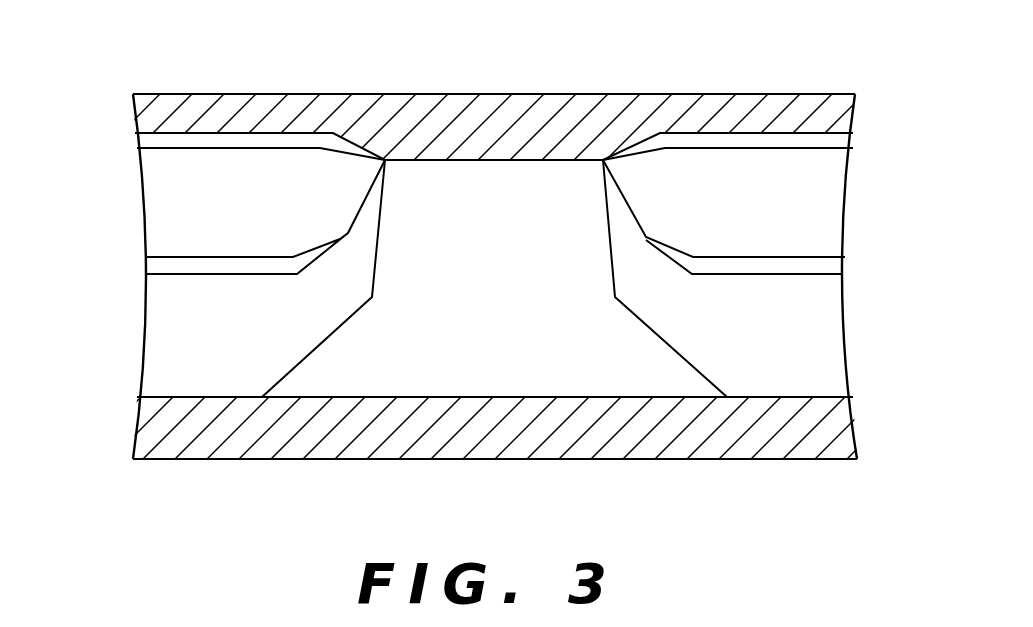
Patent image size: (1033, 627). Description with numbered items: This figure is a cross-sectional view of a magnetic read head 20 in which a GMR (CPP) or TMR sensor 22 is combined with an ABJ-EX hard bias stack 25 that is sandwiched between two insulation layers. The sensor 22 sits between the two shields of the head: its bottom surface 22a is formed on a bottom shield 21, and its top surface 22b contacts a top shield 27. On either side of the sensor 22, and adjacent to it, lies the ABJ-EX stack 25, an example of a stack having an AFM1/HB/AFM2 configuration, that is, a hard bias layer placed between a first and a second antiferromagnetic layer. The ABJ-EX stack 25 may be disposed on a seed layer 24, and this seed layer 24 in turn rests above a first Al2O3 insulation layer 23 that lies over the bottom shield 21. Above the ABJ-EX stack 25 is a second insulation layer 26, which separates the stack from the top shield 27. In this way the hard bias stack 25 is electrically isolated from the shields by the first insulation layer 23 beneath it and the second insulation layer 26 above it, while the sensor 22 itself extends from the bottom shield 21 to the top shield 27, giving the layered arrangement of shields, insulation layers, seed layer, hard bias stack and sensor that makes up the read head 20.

The read head 20 is at (122, 53).
The bottom shield 21 is at (838, 429).
The GMR (CPP) or TMR sensor 22 is at (483, 362).
The bottom surface 22a is at (390, 397).
The top surface 22b is at (560, 147).
The first Al2O3 insulation layer 23 is at (162, 329).
The seed layer 24 is at (162, 264).
The ABJ-EX stack 25 is at (162, 193).
The second insulation layer 26 is at (153, 138).
The top shield 27 is at (832, 117).